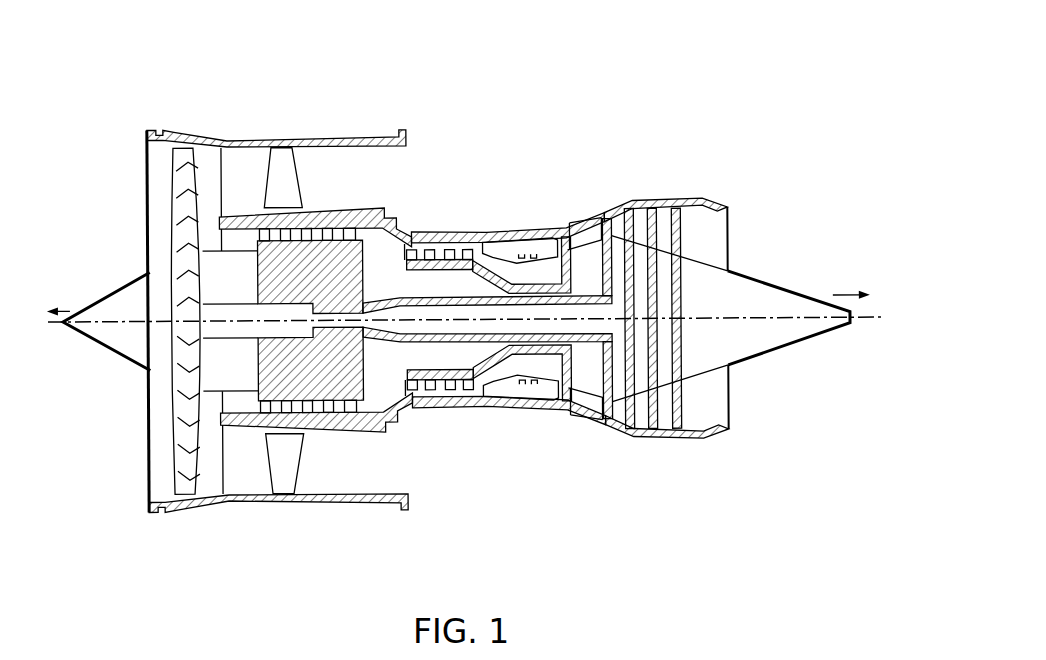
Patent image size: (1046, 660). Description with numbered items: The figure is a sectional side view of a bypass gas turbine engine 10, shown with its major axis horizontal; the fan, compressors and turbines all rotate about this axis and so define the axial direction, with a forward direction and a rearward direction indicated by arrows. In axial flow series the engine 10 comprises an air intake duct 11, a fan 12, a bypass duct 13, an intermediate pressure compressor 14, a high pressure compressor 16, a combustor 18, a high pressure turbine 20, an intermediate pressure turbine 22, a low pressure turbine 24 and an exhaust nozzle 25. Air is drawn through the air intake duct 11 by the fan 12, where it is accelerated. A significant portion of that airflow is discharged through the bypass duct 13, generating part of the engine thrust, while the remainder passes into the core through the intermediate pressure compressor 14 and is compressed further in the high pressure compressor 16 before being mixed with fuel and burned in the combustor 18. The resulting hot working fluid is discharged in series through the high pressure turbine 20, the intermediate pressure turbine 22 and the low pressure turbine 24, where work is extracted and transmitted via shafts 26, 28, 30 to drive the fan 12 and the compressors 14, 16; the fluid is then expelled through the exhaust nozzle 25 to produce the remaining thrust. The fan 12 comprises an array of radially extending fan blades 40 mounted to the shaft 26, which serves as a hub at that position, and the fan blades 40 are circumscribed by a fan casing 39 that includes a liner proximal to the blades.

The bypass gas turbine engine 10 is at (464, 300).
The air intake duct 11 is at (158, 178).
The fan 12 is at (173, 228).
The bypass duct 13 is at (364, 187).
The intermediate pressure compressor 14 is at (272, 226).
The high pressure compressor 16 is at (454, 234).
The combustor 18 is at (530, 253).
The high pressure turbine 20 is at (571, 226).
The intermediate pressure turbine 22 is at (604, 215).
The low pressure turbine 24 is at (684, 202).
The exhaust nozzle 25 is at (717, 247).
The shaft 26 is at (220, 333).
The shaft 28 is at (460, 343).
The shaft 30 is at (528, 355).
The fan casing 39 is at (183, 527).
The fan blades 40 is at (185, 158).